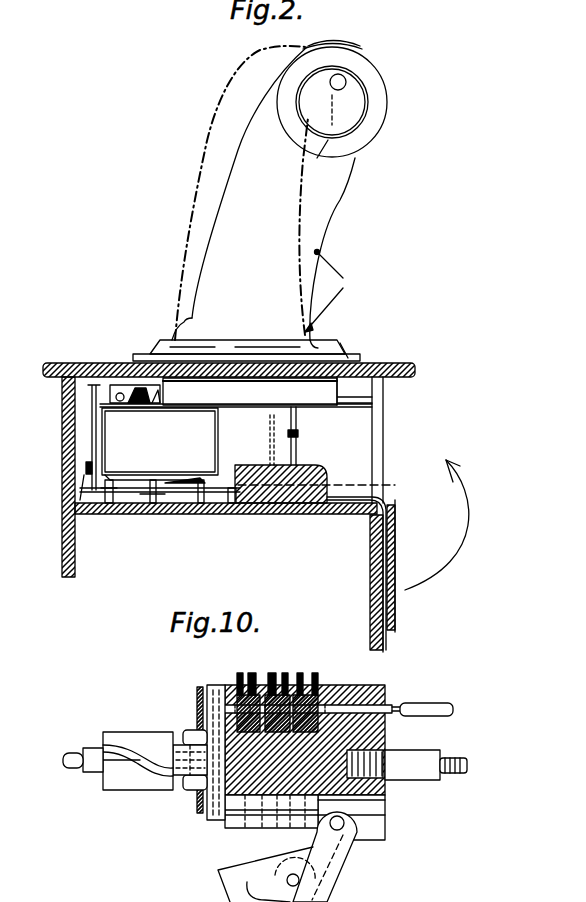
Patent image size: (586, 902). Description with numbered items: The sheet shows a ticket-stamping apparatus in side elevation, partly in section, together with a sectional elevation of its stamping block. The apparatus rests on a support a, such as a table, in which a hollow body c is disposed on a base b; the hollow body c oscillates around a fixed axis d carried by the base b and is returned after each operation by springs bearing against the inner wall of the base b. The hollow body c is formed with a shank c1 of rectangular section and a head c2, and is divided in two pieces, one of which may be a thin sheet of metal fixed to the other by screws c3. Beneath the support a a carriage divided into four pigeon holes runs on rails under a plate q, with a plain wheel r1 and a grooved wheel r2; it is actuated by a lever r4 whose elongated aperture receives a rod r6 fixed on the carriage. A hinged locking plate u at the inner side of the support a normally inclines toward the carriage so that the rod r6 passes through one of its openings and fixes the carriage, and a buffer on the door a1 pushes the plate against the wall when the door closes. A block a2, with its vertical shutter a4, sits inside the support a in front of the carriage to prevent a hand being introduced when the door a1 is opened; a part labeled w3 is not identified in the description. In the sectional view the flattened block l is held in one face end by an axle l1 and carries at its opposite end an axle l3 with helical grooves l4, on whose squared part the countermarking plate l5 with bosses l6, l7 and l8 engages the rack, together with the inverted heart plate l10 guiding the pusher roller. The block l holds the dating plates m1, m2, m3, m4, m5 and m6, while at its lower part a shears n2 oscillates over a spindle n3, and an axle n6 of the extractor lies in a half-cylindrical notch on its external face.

In FIG. 2, the support a is at (63, 440).
In FIG. 2, the door a1 is at (395, 541).
In FIG. 2, the block a2 is at (330, 483).
In FIG. 2, the vertical shutter a4 is at (298, 433).
In FIG. 2, the base b is at (165, 349).
In FIG. 2, the hollow body c is at (279, 197).
In FIG. 2, the shank c1 is at (232, 202).
In FIG. 2, the head c2 is at (387, 98).
In FIG. 2, the screws c3 is at (330, 226).
In FIG. 2, the fixed axis d is at (345, 361).
In FIG. 2, the plate q is at (355, 412).
In FIG. 2, the wheel r1 is at (201, 503).
In FIG. 2, the wheel r2 is at (108, 503).
In FIG. 2, the lever r4 is at (92, 412).
In FIG. 2, the rod r6 is at (86, 467).
In FIG. 2, the locking plate u is at (88, 488).
In FIG. 2, the post w3 is at (152, 503).
In FIG. 2, the axle n6 is at (232, 503).
In FIG. 10, the flattened block l is at (380, 690).
In FIG. 10, the axle l1 is at (425, 762).
In FIG. 10, the axle l3 is at (86, 765).
In FIG. 10, the helical grooves l4 is at (140, 762).
In FIG. 10, the countermarking plate l5 is at (200, 812).
In FIG. 10, the boss l6 is at (185, 738).
In FIG. 10, the boss l7 is at (180, 758).
In FIG. 10, the boss l8 is at (185, 782).
In FIG. 10, the inverted heart plate l10 is at (205, 700).
In FIG. 10, the dating plate m1 is at (240, 685).
In FIG. 10, the dating plate m2 is at (252, 680).
In FIG. 10, the dating plate m3 is at (272, 680).
In FIG. 10, the dating plate m4 is at (285, 680).
In FIG. 10, the dating plate m5 is at (301, 680).
In FIG. 10, the dating plate m6 is at (316, 680).
In FIG. 10, the shears n2 is at (222, 872).
In FIG. 10, the spindle n3 is at (340, 826).